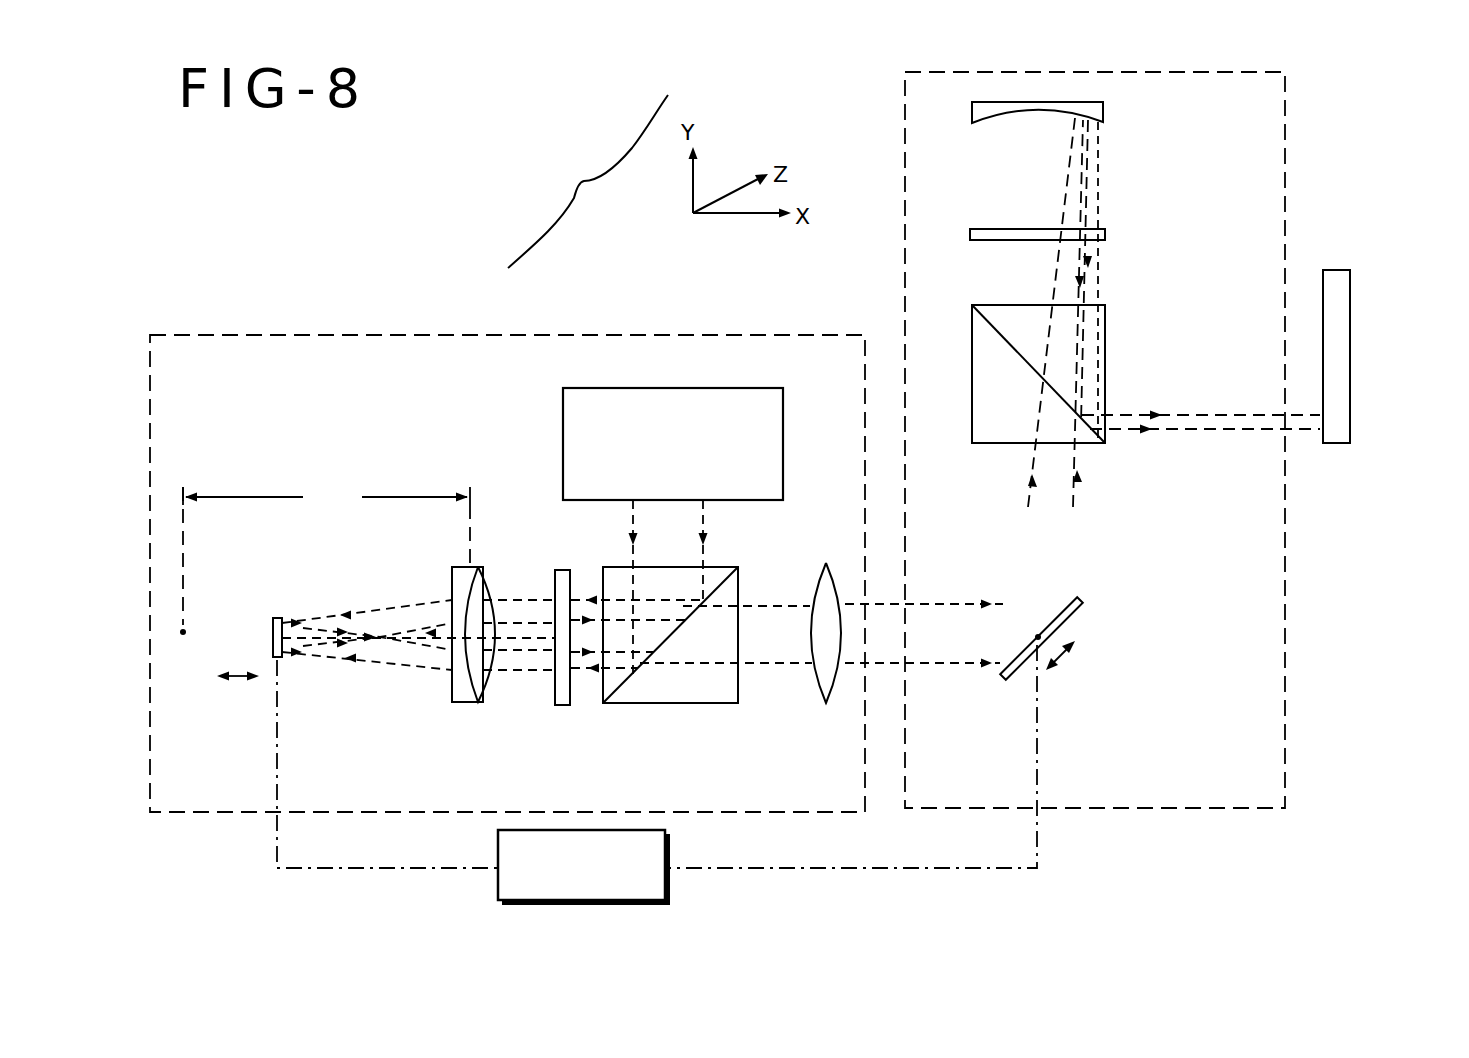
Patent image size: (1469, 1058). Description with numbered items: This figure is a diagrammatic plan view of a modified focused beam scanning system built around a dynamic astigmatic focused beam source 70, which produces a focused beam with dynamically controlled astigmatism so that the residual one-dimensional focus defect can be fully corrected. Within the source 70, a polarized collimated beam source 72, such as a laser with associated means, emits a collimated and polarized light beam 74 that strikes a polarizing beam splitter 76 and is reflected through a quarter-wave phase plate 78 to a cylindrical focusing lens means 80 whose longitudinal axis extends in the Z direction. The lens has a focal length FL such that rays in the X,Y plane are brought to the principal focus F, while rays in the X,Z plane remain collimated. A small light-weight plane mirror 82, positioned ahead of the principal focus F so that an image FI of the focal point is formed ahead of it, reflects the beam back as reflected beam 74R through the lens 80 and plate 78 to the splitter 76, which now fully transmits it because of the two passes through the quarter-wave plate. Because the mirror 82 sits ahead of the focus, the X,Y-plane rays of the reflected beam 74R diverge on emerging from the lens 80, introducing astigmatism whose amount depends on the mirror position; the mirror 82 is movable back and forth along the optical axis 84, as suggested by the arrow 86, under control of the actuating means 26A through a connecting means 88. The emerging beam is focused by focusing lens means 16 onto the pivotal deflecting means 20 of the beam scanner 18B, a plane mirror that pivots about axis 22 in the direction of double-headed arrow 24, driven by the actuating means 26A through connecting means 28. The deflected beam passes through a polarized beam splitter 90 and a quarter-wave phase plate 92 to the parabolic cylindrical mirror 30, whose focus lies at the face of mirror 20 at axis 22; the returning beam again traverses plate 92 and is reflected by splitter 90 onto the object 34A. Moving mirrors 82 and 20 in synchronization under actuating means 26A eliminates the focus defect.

The focusing lens means 16 is at (818, 688).
The beam scanner 18B is at (1236, 72).
The movable deflecting means 20 is at (1082, 600).
The pivot axis 22 is at (1035, 637).
The double-headed arrow 24 is at (1070, 652).
The actuating means 26A is at (668, 852).
The connecting means 28 is at (1040, 845).
The parabolic cylindrical mirror 30 is at (1103, 112).
The object 34A is at (1340, 270).
The dynamic astigmatic focused beam source 70 is at (606, 336).
The polarized collimated beam source 72 is at (563, 405).
The polarized collimated light beam 74 is at (705, 505).
The reflected beam 74R is at (305, 630).
The polarizing beam splitter 76 is at (710, 703).
The quarter-wave phase plate 78 is at (563, 705).
The cylindrical focusing lens means 80 is at (470, 703).
The plane reflecting means 82 is at (276, 617).
The optical axis 84 is at (512, 638).
The mirror translation direction 86 is at (238, 680).
The connecting means 88 is at (275, 840).
The polarized beam splitter 90 is at (1105, 332).
The quarter-wave phase plate 92 is at (1105, 234).
The principal focus F is at (183, 632).
The image of focal point FI is at (425, 633).
The focal length FL is at (326, 524).